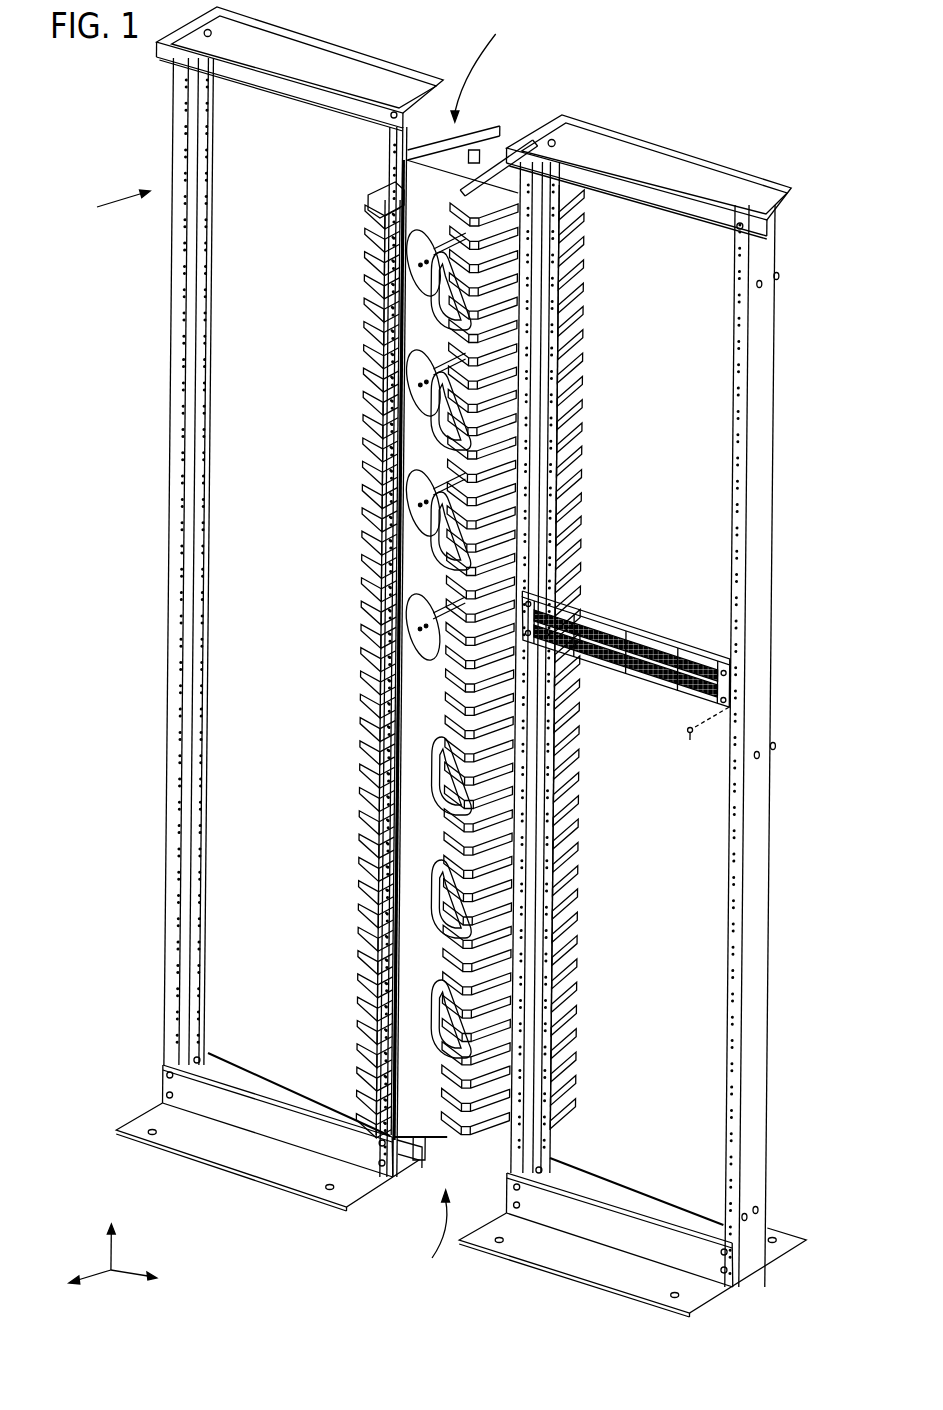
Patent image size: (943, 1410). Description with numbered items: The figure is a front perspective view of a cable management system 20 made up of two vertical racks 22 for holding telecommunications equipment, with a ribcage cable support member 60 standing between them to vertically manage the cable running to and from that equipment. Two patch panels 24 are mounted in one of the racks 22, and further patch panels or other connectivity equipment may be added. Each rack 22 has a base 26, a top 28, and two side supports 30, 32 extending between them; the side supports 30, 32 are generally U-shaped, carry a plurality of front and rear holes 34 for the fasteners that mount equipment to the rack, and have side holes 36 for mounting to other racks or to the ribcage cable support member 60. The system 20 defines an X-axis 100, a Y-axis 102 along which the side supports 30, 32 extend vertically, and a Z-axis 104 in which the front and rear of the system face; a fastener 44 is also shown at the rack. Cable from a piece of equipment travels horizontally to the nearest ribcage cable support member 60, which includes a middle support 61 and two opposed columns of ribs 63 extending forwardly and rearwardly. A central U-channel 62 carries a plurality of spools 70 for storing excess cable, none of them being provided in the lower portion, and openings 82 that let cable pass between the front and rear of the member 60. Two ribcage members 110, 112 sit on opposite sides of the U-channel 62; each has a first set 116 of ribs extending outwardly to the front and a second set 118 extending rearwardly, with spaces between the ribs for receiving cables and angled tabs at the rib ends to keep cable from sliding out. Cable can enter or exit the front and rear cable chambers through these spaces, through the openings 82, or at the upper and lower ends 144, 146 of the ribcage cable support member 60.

The cable management system 20 is at (108, 207).
The vertical rack 22 is at (333, 44).
The patch panel 24 is at (609, 623).
The base 26 is at (261, 1177).
The top 28 is at (428, 72).
The side support 30 is at (214, 978).
The side support 32 is at (391, 160).
The front and rear holes 34 is at (206, 918).
The side holes 36 is at (764, 286).
The fastener 44 is at (697, 741).
The ribcage cable support member 60 is at (439, 163).
The middle support 61 is at (462, 190).
The central U-channel 62 is at (495, 200).
The ribs 63 is at (364, 240).
The spool 70 is at (422, 233).
The opening 82 is at (446, 302).
The X-axis 100 is at (137, 1263).
The Y-axis 102 is at (125, 1237).
The Z-axis 104 is at (90, 1259).
The ribcage member 110 is at (368, 312).
The ribcage member 112 is at (594, 417).
The first set of ribs 116 is at (364, 1023).
The second set of ribs 118 is at (481, 148).
The upper end 144 is at (486, 64).
The lower end 146 is at (422, 1232).